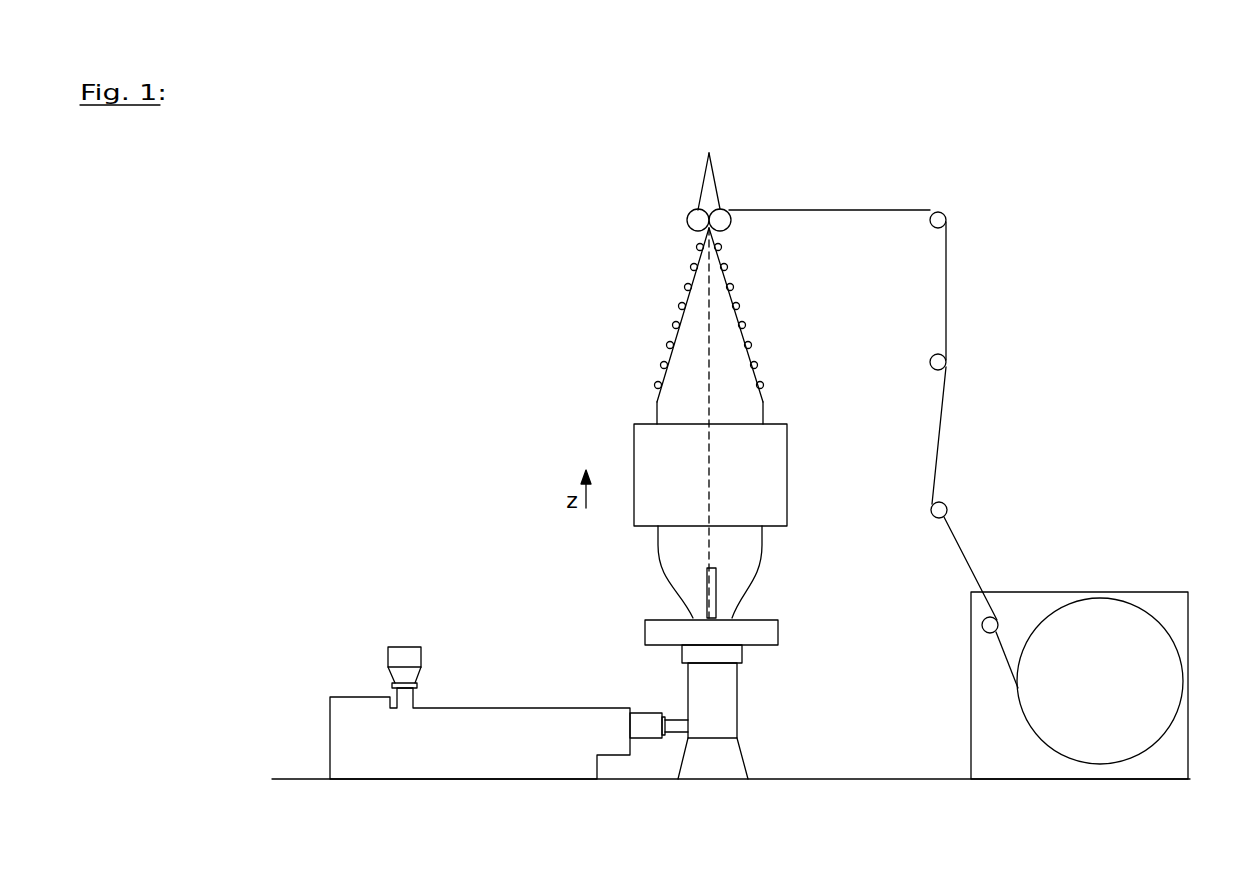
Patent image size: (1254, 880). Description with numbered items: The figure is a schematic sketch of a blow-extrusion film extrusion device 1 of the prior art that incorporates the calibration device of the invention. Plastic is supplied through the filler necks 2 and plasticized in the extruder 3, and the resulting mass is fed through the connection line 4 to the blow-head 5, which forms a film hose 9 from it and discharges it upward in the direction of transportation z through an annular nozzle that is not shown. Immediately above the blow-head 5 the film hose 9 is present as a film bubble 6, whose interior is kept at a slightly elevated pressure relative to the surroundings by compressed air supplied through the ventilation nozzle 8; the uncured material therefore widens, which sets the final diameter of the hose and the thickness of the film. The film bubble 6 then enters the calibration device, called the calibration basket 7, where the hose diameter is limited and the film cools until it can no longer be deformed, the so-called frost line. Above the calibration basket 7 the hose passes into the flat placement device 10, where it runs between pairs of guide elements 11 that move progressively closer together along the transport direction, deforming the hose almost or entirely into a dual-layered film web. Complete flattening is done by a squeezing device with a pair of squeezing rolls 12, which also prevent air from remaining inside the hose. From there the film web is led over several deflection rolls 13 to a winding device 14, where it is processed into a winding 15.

The blow-extrusion film extrusion device 1 is at (508, 314).
The filler neck 2 is at (403, 624).
The extruder 3 is at (433, 757).
The connection line 4 is at (677, 725).
The blow-head 5 is at (723, 678).
The film bubble 6 is at (763, 552).
The calibration basket 7 is at (787, 482).
The ventilation nozzle 8 is at (707, 588).
The film hose 9 is at (792, 209).
The flat placement device 10 is at (781, 270).
The guide elements 11 is at (686, 305).
The squeezing rolls 12 is at (709, 178).
The deflection rolls 13 is at (943, 222).
The winding device 14 is at (1146, 562).
The winding 15 is at (1157, 675).